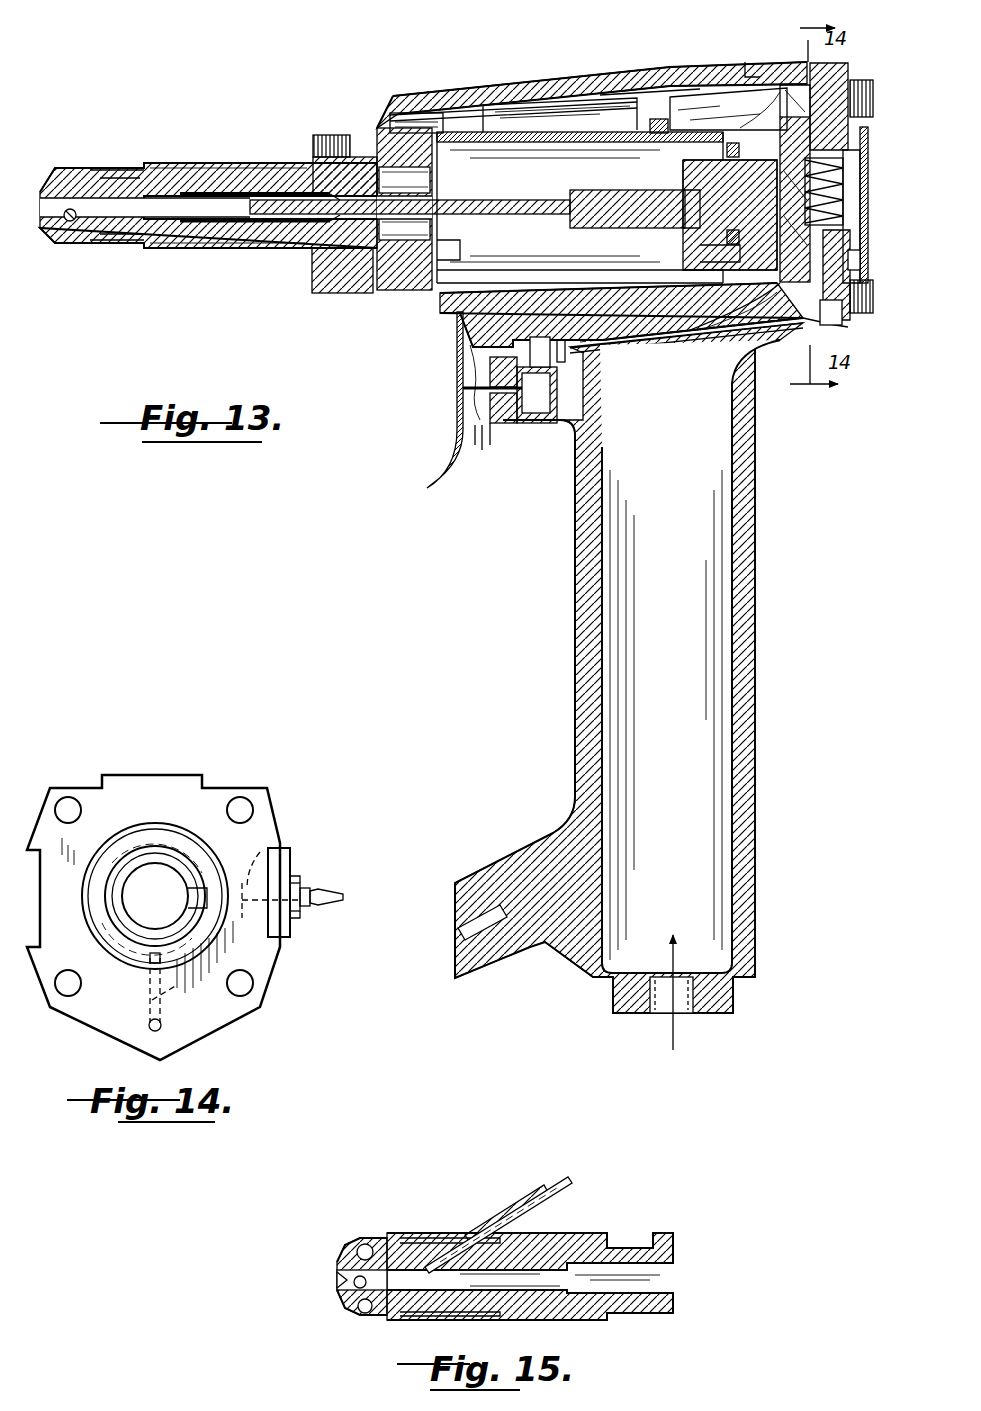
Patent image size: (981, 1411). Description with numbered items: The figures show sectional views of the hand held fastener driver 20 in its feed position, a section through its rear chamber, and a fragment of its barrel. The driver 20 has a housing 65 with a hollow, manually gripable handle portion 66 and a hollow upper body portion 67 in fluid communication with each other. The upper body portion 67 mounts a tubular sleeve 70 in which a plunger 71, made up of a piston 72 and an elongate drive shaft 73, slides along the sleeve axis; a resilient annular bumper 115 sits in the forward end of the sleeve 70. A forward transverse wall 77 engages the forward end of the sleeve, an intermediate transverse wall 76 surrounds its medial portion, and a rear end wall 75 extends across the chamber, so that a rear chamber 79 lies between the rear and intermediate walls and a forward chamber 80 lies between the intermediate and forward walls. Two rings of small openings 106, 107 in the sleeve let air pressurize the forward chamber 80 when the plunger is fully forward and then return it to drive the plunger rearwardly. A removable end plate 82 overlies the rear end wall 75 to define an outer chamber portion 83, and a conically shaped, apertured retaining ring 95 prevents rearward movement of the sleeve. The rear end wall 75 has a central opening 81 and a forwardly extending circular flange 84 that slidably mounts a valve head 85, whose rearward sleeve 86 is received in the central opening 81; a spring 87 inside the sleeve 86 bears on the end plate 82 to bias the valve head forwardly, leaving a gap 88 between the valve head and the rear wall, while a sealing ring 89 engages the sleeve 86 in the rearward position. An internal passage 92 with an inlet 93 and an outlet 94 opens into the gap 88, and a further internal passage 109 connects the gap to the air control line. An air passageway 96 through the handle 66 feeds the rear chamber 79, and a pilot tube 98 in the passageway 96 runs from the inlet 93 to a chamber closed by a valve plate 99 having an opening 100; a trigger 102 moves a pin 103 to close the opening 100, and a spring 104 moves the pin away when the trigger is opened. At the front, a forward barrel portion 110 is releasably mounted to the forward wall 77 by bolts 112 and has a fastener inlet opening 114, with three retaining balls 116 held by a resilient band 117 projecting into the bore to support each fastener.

In FIG. 13, the forward barrel portion 110 is at (234, 163).
In FIG. 15, the forward barrel portion 110 is at (586, 1235).
In FIG. 13, the bolts 112 is at (333, 135).
In FIG. 13, the forward transverse wall 77 is at (386, 122).
In FIG. 13, the openings 107 is at (452, 126).
In FIG. 13, the openings 106 is at (468, 118).
In FIG. 13, the forward chamber 80 is at (525, 90).
In FIG. 13, the upper body portion 67 is at (594, 90).
In FIG. 13, the intermediate transverse wall 76 is at (626, 94).
In FIG. 13, the rear chamber 79 is at (690, 122).
In FIG. 13, the rear end wall 75 is at (800, 85).
In FIG. 14, the rear end wall 75 is at (230, 790).
In FIG. 13, the retaining ring 95 is at (750, 77).
In FIG. 13, the gap 88 is at (856, 80).
In FIG. 13, the end plate 82 is at (868, 142).
In FIG. 13, the spring 87 is at (866, 175).
In FIG. 13, the sleeve 86 is at (866, 204).
In FIG. 13, the sealing ring 89 is at (862, 238).
In FIG. 13, the outer chamber portion 83 is at (856, 266).
In FIG. 13, the internal passage 92 is at (838, 326).
In FIG. 14, the internal passage 92 is at (144, 1003).
In FIG. 13, the housing 65 is at (757, 398).
In FIG. 13, the tubular sleeve 70 is at (500, 148).
In FIG. 13, the drive shaft 73 is at (517, 200).
In FIG. 13, the plunger 71 is at (640, 183).
In FIG. 13, the piston 72 is at (723, 162).
In FIG. 13, the resilient annular bumper 115 is at (438, 250).
In FIG. 13, the valve head 85 is at (723, 243).
In FIG. 13, the circular flange 84 is at (770, 288).
In FIG. 14, the circular flange 84 is at (154, 823).
In FIG. 13, the opening 100 is at (560, 380).
In FIG. 13, the valve plate 99 is at (560, 404).
In FIG. 13, the pilot tube 98 is at (647, 352).
In FIG. 13, the pin 103 is at (463, 375).
In FIG. 13, the trigger 102 is at (455, 455).
In FIG. 13, the spring 104 is at (490, 425).
In FIG. 13, the air passageway 96 is at (681, 540).
In FIG. 13, the handle portion 66 is at (745, 596).
In FIG. 13, the hand held fastener driver 20 is at (513, 532).
In FIG. 14, the central opening 81 is at (125, 900).
In FIG. 14, the outlet 94 is at (150, 958).
In FIG. 14, the inlet 93 is at (160, 1025).
In FIG. 14, the internal passage 109 is at (262, 850).
In FIG. 15, the fastener inlet opening 114 is at (570, 1186).
In FIG. 15, the resilient band 117 is at (370, 1240).
In FIG. 15, the balls 116 is at (337, 1277).